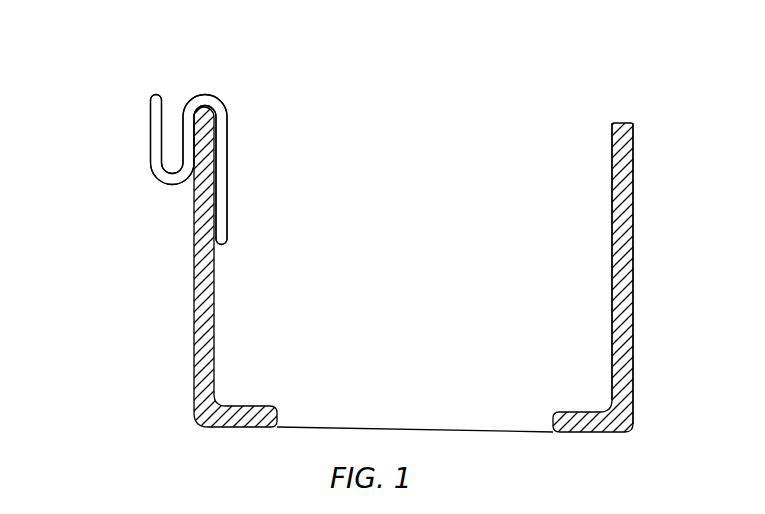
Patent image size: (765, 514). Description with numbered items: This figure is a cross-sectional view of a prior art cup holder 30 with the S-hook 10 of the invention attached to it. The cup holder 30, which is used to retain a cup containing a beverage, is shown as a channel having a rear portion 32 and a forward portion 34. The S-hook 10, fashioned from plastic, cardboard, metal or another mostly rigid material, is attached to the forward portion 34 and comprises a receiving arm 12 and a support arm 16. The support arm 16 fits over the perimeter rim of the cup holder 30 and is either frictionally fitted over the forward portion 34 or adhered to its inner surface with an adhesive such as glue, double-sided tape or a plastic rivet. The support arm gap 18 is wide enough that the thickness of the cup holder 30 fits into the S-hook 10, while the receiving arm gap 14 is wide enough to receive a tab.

The S-hook 10 is at (83, 70).
The receiving arm 12 is at (156, 95).
The receiving arm gap 14 is at (176, 114).
The support arm 16 is at (230, 199).
The support arm gap 18 is at (212, 112).
The cup holder 30 is at (580, 133).
The rear portion 32 is at (633, 290).
The forward portion 34 is at (193, 283).